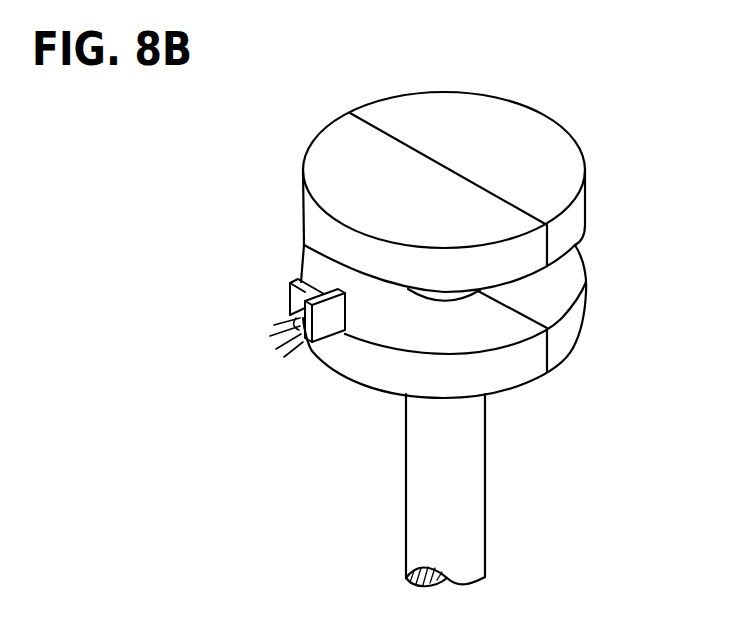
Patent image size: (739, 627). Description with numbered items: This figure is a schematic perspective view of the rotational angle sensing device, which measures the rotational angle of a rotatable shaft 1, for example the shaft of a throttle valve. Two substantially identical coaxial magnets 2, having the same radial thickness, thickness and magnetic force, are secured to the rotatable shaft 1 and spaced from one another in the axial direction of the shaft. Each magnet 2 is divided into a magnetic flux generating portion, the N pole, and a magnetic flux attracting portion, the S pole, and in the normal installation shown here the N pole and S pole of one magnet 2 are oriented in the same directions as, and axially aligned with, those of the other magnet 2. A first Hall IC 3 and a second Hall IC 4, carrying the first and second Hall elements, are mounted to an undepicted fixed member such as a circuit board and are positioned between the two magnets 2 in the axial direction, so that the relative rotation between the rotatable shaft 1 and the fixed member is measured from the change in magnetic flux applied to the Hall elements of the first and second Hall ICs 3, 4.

The rotatable shaft 1 is at (470, 470).
The magnet 2 is at (577, 212).
The first Hall IC 3 is at (288, 296).
The second Hall IC 4 is at (327, 323).